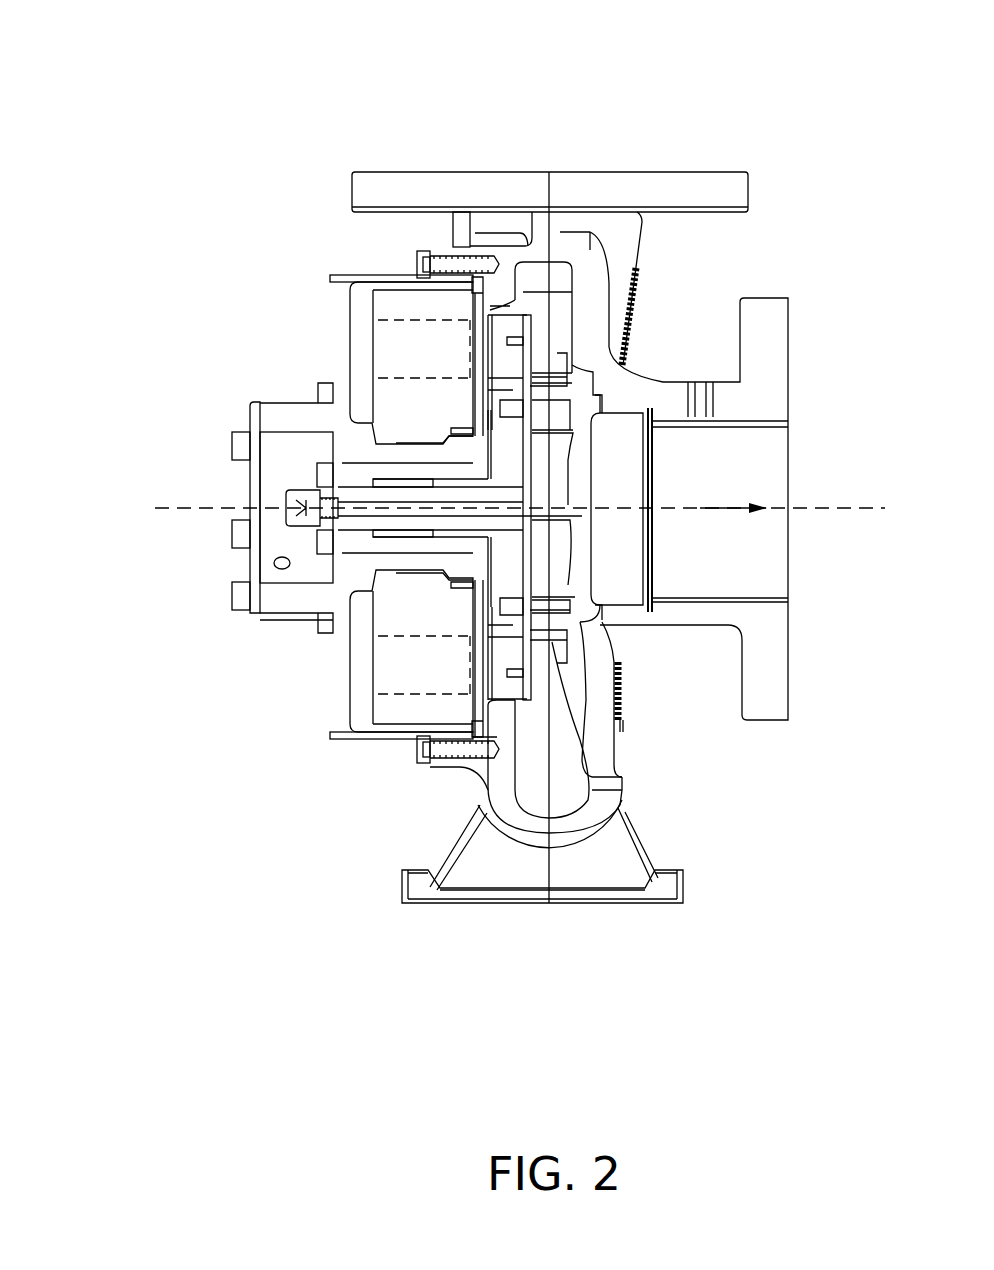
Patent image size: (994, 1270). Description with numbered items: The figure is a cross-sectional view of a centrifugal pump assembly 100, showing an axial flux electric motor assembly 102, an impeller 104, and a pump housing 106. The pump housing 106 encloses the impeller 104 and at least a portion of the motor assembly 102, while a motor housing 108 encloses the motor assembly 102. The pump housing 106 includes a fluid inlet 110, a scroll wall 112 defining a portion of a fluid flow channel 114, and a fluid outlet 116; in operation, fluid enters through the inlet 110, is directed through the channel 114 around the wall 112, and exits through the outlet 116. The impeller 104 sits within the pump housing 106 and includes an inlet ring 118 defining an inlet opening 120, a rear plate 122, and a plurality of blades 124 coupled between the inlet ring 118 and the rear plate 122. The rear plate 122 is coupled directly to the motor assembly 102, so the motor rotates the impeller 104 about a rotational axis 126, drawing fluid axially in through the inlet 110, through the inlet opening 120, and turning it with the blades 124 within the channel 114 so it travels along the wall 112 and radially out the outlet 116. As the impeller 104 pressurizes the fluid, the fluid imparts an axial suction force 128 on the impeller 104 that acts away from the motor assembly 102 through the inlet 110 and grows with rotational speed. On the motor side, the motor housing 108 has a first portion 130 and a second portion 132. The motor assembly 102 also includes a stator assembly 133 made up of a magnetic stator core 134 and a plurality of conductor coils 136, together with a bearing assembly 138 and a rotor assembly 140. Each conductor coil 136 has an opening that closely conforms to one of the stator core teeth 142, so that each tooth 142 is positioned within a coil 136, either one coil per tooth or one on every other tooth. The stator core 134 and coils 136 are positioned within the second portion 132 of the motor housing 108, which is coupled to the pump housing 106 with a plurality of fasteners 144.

The centrifugal pump assembly 100 is at (120, 170).
The axial flux electric motor assembly 102 is at (198, 770).
The impeller 104 is at (594, 632).
The pump housing 106 is at (776, 315).
The motor housing 108 is at (238, 320).
The fluid inlet 110 is at (778, 455).
The scroll wall 112 is at (560, 820).
The fluid flow channel 114 is at (571, 281).
The fluid outlet 116 is at (546, 128).
The inlet ring 118 is at (618, 600).
The inlet opening 120 is at (630, 570).
The rear plate 122 is at (532, 362).
The blades 124 is at (622, 722).
The rotational axis 126 is at (188, 506).
The axial suction force 128 is at (733, 506).
The first portion 130 is at (270, 603).
The second portion 132 is at (393, 300).
The stator assembly 133 is at (332, 731).
The magnetic stator core 134 is at (373, 660).
The conductor coils 136 is at (370, 278).
The bearing assembly 138 is at (455, 436).
The rotor assembly 140 is at (503, 712).
The stator core teeth 142 is at (390, 680).
The fasteners 144 is at (443, 263).